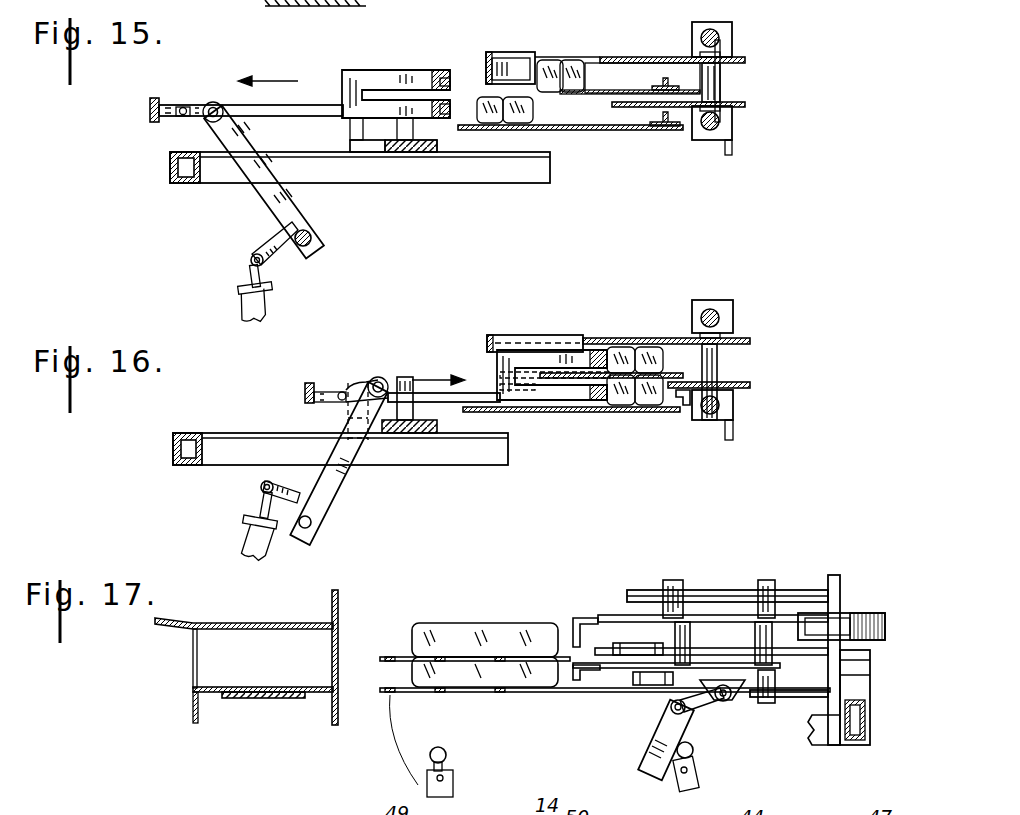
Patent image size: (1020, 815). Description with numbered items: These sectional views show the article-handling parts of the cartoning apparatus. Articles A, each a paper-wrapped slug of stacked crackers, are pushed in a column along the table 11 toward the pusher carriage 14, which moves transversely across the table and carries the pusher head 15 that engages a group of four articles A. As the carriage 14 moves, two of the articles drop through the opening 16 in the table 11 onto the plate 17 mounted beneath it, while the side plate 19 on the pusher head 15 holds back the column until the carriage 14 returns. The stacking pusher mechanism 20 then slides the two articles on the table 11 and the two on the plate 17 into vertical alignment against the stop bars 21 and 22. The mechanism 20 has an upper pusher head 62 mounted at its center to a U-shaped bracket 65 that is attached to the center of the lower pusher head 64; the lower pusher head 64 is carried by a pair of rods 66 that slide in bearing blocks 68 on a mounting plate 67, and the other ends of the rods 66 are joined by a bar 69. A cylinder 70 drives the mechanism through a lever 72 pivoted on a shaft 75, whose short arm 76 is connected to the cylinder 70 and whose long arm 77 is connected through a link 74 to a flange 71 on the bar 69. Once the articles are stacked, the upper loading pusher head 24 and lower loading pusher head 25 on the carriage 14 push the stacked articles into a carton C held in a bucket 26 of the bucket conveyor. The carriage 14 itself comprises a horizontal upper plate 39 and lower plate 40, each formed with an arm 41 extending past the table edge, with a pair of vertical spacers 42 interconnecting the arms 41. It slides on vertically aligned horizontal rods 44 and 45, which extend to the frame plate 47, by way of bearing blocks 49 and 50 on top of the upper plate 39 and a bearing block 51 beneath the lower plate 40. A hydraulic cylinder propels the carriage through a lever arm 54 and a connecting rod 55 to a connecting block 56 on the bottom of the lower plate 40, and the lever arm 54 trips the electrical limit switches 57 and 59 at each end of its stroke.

In FIG. 15, the table 11 is at (604, 71).
In FIG. 16, the table 11 is at (552, 372).
In FIG. 17, the table 11 is at (394, 656).
In FIG. 15, the pusher carriage 14 is at (742, 36).
In FIG. 16, the pusher carriage 14 is at (730, 302).
In FIG. 17, the pusher carriage 14 is at (694, 580).
In FIG. 15, the pusher head 15 is at (522, 60).
In FIG. 16, the pusher head 15 is at (510, 344).
In FIG. 17, the pusher head 15 is at (858, 612).
In FIG. 15, the opening 16 is at (546, 118).
In FIG. 15, the plate 17 is at (604, 130).
In FIG. 16, the plate 17 is at (562, 413).
In FIG. 17, the plate 17 is at (386, 690).
In FIG. 15, the side plate 19 is at (488, 62).
In FIG. 16, the side plate 19 is at (482, 346).
In FIG. 17, the side plate 19 is at (878, 632).
In FIG. 15, the stacking pusher mechanism 20 is at (402, 58).
In FIG. 16, the stacking pusher mechanism 20 is at (565, 372).
In FIG. 15, the stop bar 21 is at (668, 76).
In FIG. 16, the stop bar 21 is at (700, 360).
In FIG. 17, the stop bar 21 is at (636, 642).
In FIG. 15, the stop bar 22 is at (660, 118).
In FIG. 16, the stop bar 22 is at (680, 410).
In FIG. 17, the stop bar 22 is at (642, 688).
In FIG. 17, the upper loading pusher head 24 is at (574, 616).
In FIG. 17, the lower loading pusher head 25 is at (574, 682).
In FIG. 17, the bucket 26 is at (250, 700).
In FIG. 15, the upper plate 39 is at (630, 56).
In FIG. 16, the upper plate 39 is at (664, 338).
In FIG. 17, the upper plate 39 is at (605, 614).
In FIG. 15, the lower plate 40 is at (640, 108).
In FIG. 16, the lower plate 40 is at (700, 378).
In FIG. 17, the lower plate 40 is at (597, 690).
In FIG. 15, the arm 41 is at (745, 60).
In FIG. 16, the arm 41 is at (748, 342).
In FIG. 17, the arm 41 is at (700, 615).
In FIG. 15, the spacer 42 is at (716, 82).
In FIG. 16, the spacer 42 is at (724, 398).
In FIG. 17, the spacer 42 is at (755, 640).
In FIG. 15, the rod 44 is at (711, 28).
In FIG. 16, the rod 44 is at (711, 308).
In FIG. 17, the rod 44 is at (796, 592).
In FIG. 15, the rod 45 is at (712, 130).
In FIG. 16, the rod 45 is at (712, 420).
In FIG. 17, the rod 45 is at (796, 698).
In FIG. 17, the frame plate 47 is at (834, 578).
In FIG. 17, the bearing block 49 is at (672, 580).
In FIG. 16, the bearing block 50 is at (736, 320).
In FIG. 17, the bearing block 50 is at (768, 582).
In FIG. 15, the bearing block 51 is at (733, 127).
In FIG. 16, the bearing block 51 is at (735, 410).
In FIG. 17, the bearing block 51 is at (766, 704).
In FIG. 17, the lever arm 54 is at (656, 738).
In FIG. 17, the connecting rod 55 is at (686, 710).
In FIG. 17, the connecting block 56 is at (732, 700).
In FIG. 17, the electrical limit switch 57 is at (446, 748).
In FIG. 17, the electrical limit switch 59 is at (694, 752).
In FIG. 15, the upper pusher head 62 is at (448, 74).
In FIG. 16, the upper pusher head 62 is at (622, 360).
In FIG. 15, the lower pusher head 64 is at (452, 100).
In FIG. 16, the lower pusher head 64 is at (586, 404).
In FIG. 15, the U-shaped bracket 65 is at (378, 68).
In FIG. 16, the U-shaped bracket 65 is at (510, 386).
In FIG. 15, the rod 66 is at (314, 104).
In FIG. 16, the rod 66 is at (452, 398).
In FIG. 15, the mounting plate 67 is at (418, 152).
In FIG. 16, the mounting plate 67 is at (416, 434).
In FIG. 15, the bearing block 68 is at (400, 152).
In FIG. 16, the bearing block 68 is at (406, 376).
In FIG. 15, the bar 69 is at (150, 110).
In FIG. 16, the bar 69 is at (304, 390).
In FIG. 15, the cylinder 70 is at (242, 302).
In FIG. 16, the cylinder 70 is at (243, 526).
In FIG. 15, the flange 71 is at (172, 118).
In FIG. 16, the flange 71 is at (330, 397).
In FIG. 15, the lever 72 is at (258, 199).
In FIG. 16, the lever 72 is at (338, 472).
In FIG. 15, the link 74 is at (208, 101).
In FIG. 16, the link 74 is at (368, 378).
In FIG. 15, the shaft 75 is at (313, 240).
In FIG. 15, the short arm 76 is at (271, 250).
In FIG. 16, the short arm 76 is at (296, 484).
In FIG. 15, the long arm 77 is at (236, 140).
In FIG. 16, the long arm 77 is at (338, 444).
In FIG. 15, the article A is at (558, 66).
In FIG. 16, the article A is at (650, 360).
In FIG. 17, the article A is at (456, 640).
In FIG. 17, the carton C is at (228, 620).